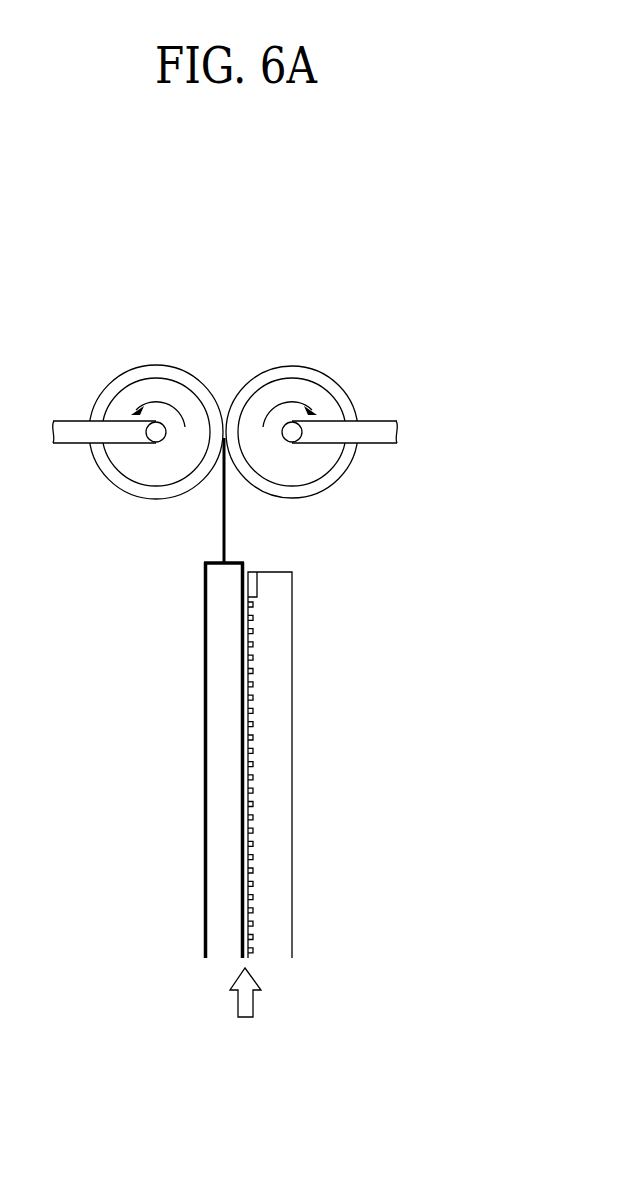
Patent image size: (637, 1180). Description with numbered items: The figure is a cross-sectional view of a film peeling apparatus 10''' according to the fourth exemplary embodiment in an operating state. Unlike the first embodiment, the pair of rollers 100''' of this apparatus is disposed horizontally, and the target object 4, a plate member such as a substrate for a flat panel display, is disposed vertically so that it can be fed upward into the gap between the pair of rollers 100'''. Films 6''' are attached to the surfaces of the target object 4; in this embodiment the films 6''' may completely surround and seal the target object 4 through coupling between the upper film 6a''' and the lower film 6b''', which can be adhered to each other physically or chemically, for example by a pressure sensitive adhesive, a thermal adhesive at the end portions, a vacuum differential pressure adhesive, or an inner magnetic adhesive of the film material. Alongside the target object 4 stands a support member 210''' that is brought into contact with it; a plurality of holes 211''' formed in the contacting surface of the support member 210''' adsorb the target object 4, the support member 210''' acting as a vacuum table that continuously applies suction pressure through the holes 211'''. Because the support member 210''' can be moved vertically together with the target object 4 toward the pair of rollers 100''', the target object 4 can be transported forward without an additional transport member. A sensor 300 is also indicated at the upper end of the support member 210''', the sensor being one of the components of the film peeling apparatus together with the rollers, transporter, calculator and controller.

The film peeling apparatus 10''' is at (226, 619).
The pair of rollers 100''' is at (225, 360).
The target object 4 is at (213, 890).
The films 6''' is at (149, 760).
The upper film 6a''' is at (153, 760).
The lower film 6b''' is at (171, 760).
The sensor 300 is at (251, 582).
The holes 211''' is at (320, 777).
The support member 210''' is at (324, 765).